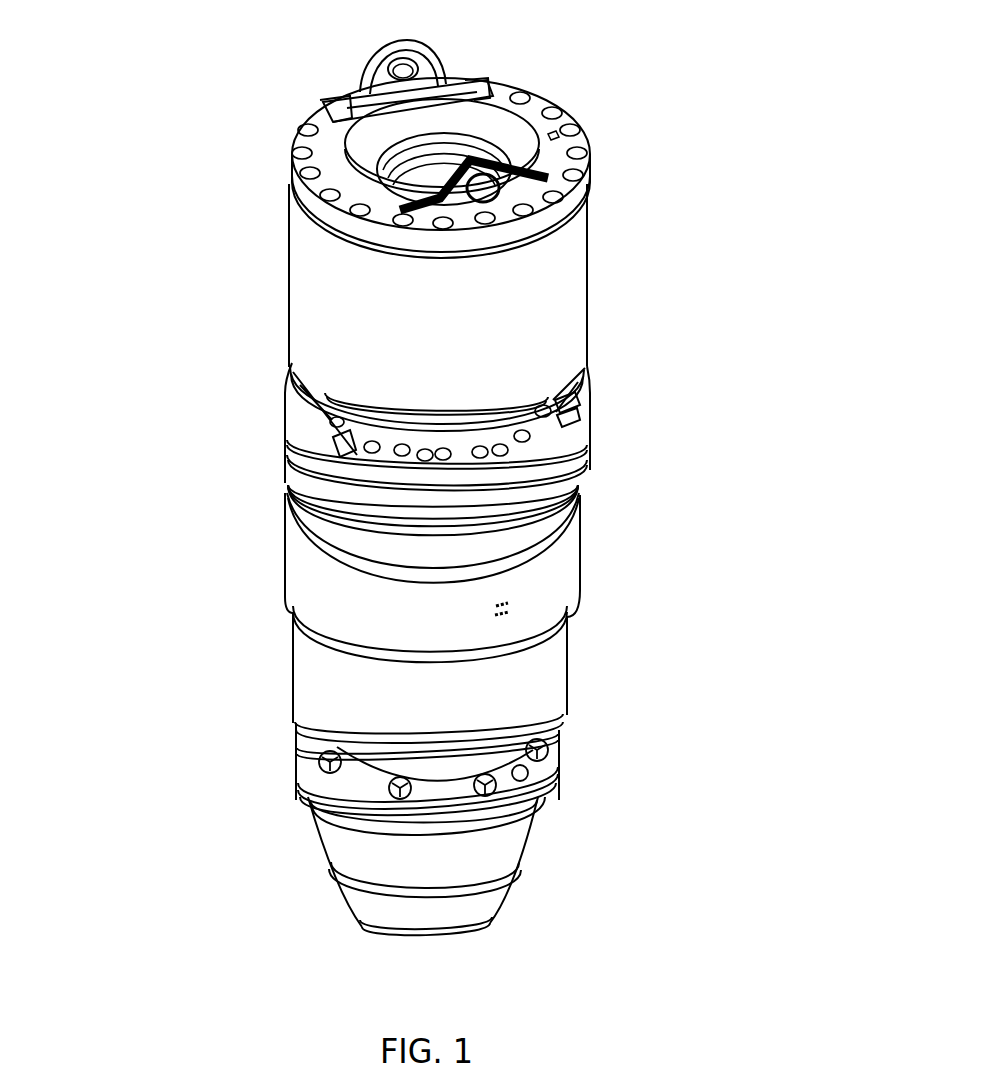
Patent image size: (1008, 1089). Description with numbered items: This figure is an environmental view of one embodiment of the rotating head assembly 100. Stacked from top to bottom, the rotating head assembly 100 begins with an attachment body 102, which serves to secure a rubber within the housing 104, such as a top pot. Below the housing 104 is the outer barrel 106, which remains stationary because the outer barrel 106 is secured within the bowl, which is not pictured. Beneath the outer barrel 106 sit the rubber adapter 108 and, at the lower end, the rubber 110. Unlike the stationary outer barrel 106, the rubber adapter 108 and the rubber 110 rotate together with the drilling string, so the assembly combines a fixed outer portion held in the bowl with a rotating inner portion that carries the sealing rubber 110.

The rotating head assembly 100 is at (287, 343).
The attachment body 102 is at (535, 110).
The housing 104 is at (513, 286).
The outer barrel 106 is at (578, 575).
The rubber adapter 108 is at (562, 740).
The rubber 110 is at (528, 847).